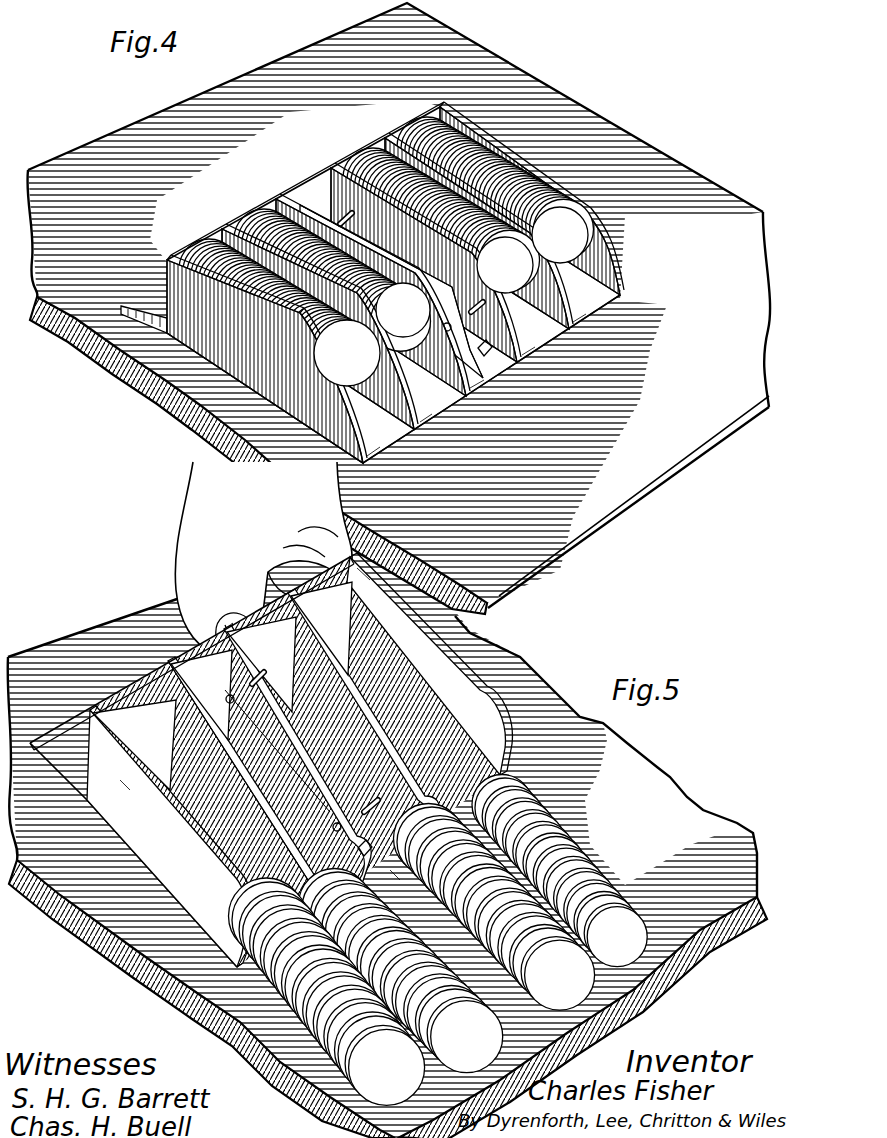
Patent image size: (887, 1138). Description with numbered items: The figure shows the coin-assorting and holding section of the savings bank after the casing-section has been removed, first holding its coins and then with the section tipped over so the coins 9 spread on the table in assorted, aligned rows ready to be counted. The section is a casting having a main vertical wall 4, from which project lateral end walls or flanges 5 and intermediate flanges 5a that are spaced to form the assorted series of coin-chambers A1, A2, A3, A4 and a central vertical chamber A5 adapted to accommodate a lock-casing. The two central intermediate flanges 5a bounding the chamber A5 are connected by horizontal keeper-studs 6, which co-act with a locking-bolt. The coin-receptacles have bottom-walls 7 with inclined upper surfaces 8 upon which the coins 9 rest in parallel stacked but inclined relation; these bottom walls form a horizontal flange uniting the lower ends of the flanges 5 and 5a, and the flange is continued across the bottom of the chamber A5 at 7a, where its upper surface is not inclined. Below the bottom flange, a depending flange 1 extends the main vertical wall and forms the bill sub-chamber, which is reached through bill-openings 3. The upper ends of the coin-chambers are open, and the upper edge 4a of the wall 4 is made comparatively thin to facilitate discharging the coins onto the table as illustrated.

In FIG. 4, the depending flange 1 is at (135, 308).
In FIG. 5, the depending flange 1 is at (55, 725).
In FIG. 4, the bill-openings 3 is at (485, 354).
In FIG. 5, the bill-openings 3 is at (365, 855).
In FIG. 4, the main vertical wall 4 is at (345, 456).
In FIG. 5, the main vertical wall 4 is at (148, 865).
In FIG. 4, the upper edge of the vertical wall 4a is at (385, 450).
In FIG. 5, the upper edge of the vertical wall 4a is at (237, 968).
In FIG. 4, the lateral end walls or flanges 5 is at (620, 220).
In FIG. 5, the lateral end walls or flanges 5 is at (299, 760).
In FIG. 4, the intermediate flanges 5a is at (396, 291).
In FIG. 5, the intermediate flanges 5a is at (316, 771).
In FIG. 4, the keeper-studs 6 is at (353, 220).
In FIG. 5, the keeper-studs 6 is at (261, 680).
In FIG. 4, the bottom-walls 7 is at (192, 258).
In FIG. 5, the bottom-walls 7 is at (127, 698).
In FIG. 4, the bottom flange portion across the lock-casing chamber 7a is at (298, 190).
In FIG. 5, the bottom flange portion across the lock-casing chamber 7a is at (197, 640).
In FIG. 5, the inclined upper surfaces 8 is at (222, 686).
In FIG. 4, the coins 9 is at (407, 282).
In FIG. 5, the coins 9 is at (507, 813).
In FIG. 4, the coin-chamber A1 is at (418, 462).
In FIG. 5, the coin-chamber A1 is at (378, 603).
In FIG. 4, the coin-chamber A2 is at (448, 430).
In FIG. 5, the coin-chamber A2 is at (199, 781).
In FIG. 4, the coin-chamber A3 is at (548, 350).
In FIG. 4, the coin-chamber A4 is at (638, 305).
In FIG. 4, the central vertical chamber A5 is at (503, 407).
In FIG. 5, the central vertical chamber A5 is at (403, 886).